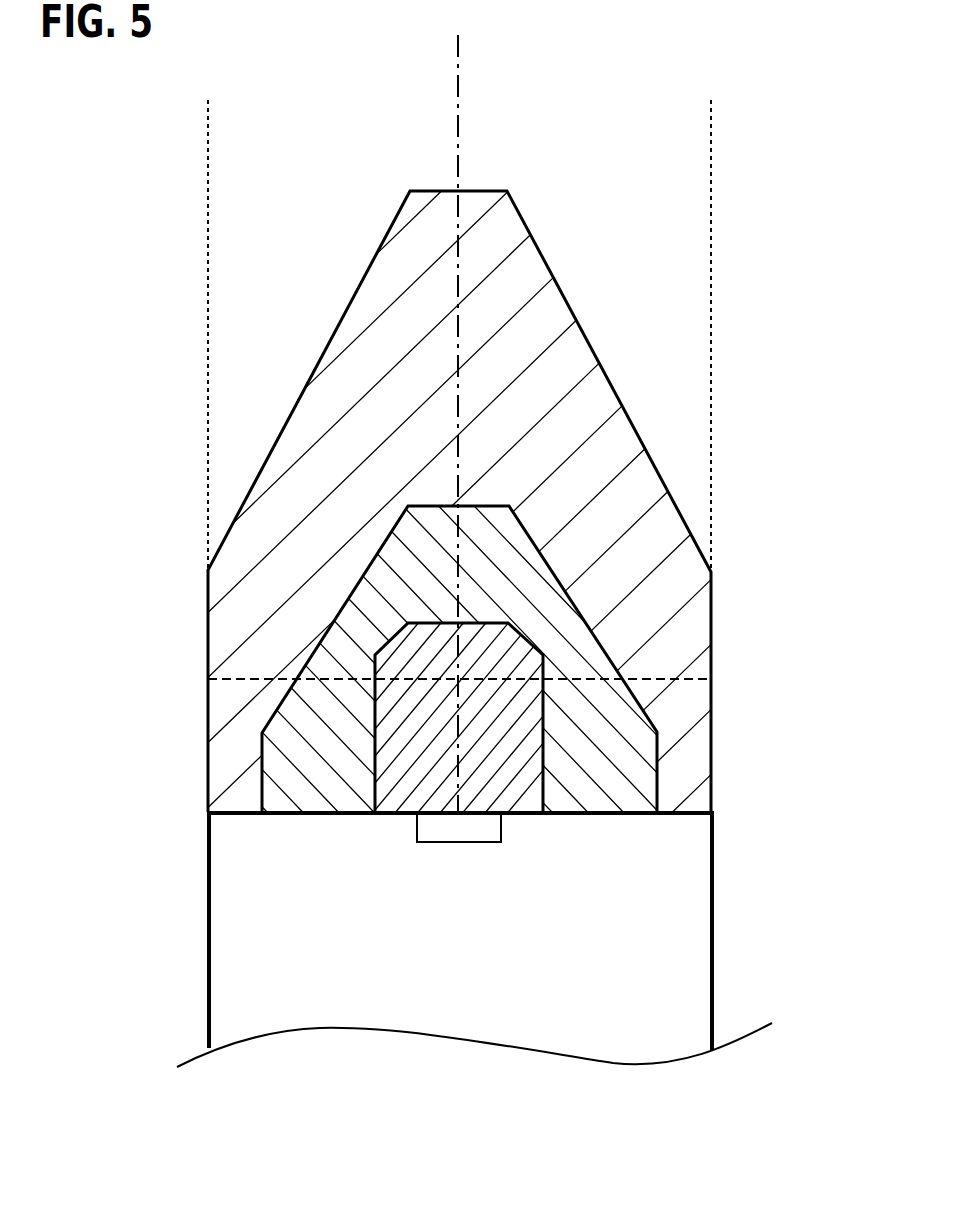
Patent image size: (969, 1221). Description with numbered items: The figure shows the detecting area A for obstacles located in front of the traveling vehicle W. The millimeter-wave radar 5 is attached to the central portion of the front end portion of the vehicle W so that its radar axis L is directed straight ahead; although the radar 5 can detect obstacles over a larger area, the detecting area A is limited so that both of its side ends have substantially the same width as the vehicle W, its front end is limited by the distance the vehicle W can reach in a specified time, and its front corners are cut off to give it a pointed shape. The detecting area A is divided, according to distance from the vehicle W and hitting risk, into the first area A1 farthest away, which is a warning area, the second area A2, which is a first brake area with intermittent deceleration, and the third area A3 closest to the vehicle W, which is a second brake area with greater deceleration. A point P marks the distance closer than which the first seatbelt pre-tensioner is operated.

The detecting area A is at (822, 355).
The first area A1 is at (600, 396).
The second area A2 is at (527, 573).
The third area A3 is at (527, 738).
The radar axis L is at (458, 52).
The point P is at (441, 681).
The vehicle W is at (712, 923).
The millimeter-wave radar 5 is at (463, 843).